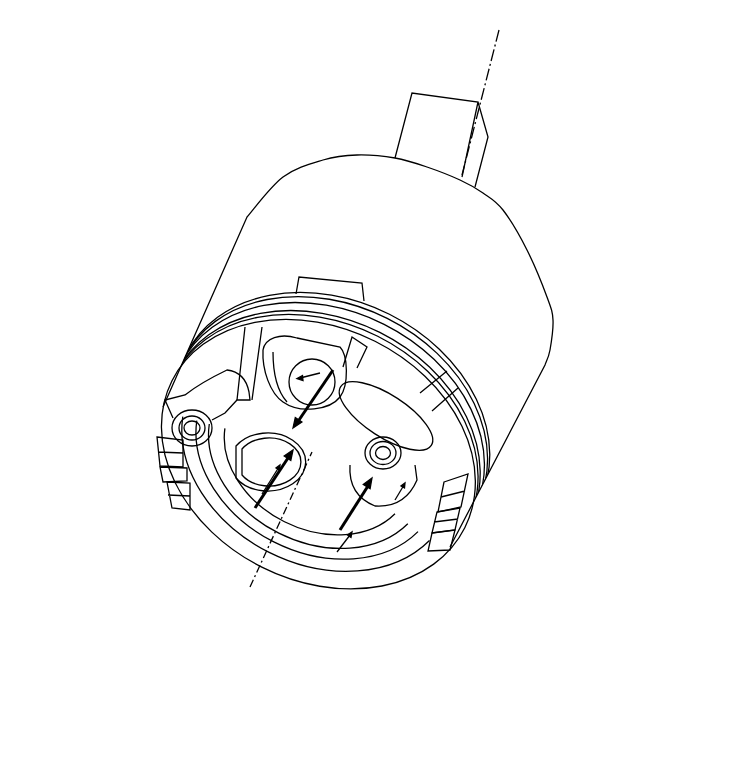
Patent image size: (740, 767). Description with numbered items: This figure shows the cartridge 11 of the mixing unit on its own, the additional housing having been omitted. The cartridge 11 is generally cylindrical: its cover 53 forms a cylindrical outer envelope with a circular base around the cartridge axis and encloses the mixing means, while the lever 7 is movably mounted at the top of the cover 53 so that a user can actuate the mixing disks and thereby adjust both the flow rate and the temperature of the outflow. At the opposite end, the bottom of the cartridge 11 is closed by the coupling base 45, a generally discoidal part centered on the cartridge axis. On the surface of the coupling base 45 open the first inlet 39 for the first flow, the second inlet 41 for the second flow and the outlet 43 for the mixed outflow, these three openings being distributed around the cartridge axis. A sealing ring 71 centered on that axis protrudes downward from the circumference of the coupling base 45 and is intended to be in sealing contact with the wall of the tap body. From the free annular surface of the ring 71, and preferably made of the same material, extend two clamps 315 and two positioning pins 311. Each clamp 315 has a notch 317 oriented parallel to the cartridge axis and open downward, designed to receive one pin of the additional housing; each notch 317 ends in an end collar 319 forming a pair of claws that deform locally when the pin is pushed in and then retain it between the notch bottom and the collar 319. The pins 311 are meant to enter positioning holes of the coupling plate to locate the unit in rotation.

The lever 7 is at (443, 147).
The cartridge 11 is at (205, 258).
The first inlet 39 is at (252, 481).
The second inlet 41 is at (366, 525).
The outlet 43 is at (278, 333).
The coupling base 45 is at (335, 556).
The cover 53 is at (500, 248).
The sealing ring 71 is at (437, 352).
The positioning pins 311 is at (190, 405).
The clamps 315 is at (170, 458).
The notch 317 is at (167, 493).
The end collar 319 is at (168, 500).